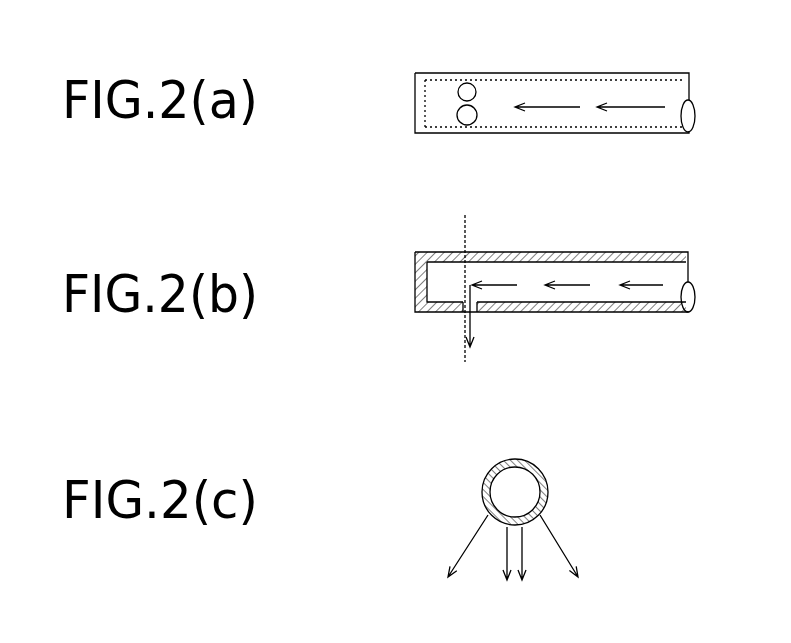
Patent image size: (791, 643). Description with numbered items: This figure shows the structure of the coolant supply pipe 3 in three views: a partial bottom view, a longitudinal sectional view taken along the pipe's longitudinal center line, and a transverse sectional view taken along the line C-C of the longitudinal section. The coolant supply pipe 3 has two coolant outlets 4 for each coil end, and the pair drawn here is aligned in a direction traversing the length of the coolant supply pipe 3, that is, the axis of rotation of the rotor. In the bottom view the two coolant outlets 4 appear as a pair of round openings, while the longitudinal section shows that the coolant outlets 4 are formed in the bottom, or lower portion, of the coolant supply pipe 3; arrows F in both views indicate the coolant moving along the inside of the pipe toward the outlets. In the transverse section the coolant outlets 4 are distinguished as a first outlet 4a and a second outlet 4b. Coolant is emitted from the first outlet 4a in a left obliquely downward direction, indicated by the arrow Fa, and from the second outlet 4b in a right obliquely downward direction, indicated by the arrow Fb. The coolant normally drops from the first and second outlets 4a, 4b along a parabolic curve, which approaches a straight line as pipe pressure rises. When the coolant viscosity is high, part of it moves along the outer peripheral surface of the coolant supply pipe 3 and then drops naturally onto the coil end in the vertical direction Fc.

In FIG. 2A, the coolant supply pipe 3 is at (387, 63).
In FIG. 2B, the coolant supply pipe 3 is at (386, 242).
In FIG. 2C, the coolant supply pipe 3 is at (489, 457).
In FIG. 2A, the coolant outlets 4 is at (477, 107).
In FIG. 2B, the coolant outlets 4 is at (478, 314).
In FIG. 2C, the first outlet 4a is at (487, 509).
In FIG. 2C, the second outlet 4b is at (545, 509).
In FIG. 2A, the fluid flow F is at (628, 105).
In FIG. 2B, the fluid flow F is at (643, 280).
In FIG. 2C, the arrow Fa is at (440, 600).
In FIG. 2C, the arrow Fb is at (586, 600).
In FIG. 2C, the vertical direction Fc is at (515, 570).
In FIG. 2B, the line C- C is at (452, 357).